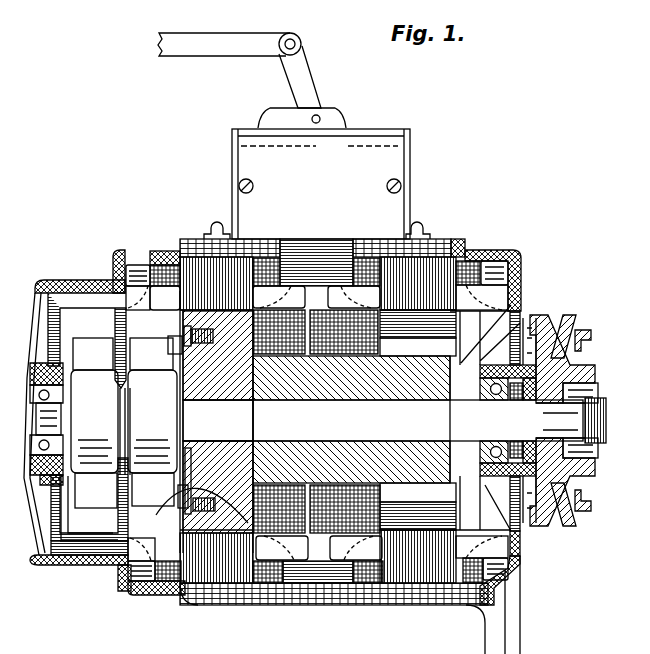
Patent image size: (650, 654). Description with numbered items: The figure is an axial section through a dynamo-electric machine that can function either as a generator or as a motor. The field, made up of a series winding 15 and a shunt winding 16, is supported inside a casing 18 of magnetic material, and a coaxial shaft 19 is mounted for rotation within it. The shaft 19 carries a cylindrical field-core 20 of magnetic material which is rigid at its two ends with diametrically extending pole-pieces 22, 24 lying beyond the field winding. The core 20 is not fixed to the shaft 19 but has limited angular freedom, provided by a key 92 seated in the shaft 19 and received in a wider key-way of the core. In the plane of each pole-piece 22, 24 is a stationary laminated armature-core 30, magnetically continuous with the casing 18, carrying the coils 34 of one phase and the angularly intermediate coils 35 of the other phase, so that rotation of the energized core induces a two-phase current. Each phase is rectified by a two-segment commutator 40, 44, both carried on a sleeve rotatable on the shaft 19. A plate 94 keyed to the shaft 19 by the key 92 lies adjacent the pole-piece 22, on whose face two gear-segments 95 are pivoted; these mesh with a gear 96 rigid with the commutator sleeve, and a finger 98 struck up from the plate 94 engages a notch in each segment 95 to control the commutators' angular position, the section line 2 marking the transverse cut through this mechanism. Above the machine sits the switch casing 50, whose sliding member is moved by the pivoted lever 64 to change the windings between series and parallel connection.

The section line 2— 2 is at (195, 175).
The series winding 15 is at (282, 568).
The shunt winding 16 is at (322, 560).
The casing 18 is at (304, 597).
The shaft 19 is at (429, 419).
The field-core 20 is at (445, 483).
The pole-piece 22 is at (170, 312).
The pole-piece 24 is at (526, 322).
The armature-core 30 is at (167, 243).
The coils 34 is at (109, 256).
The coils 35 is at (126, 291).
The commutator 40 is at (94, 423).
The commutator 44 is at (152, 422).
The enclosing casing 50 is at (351, 142).
The pivoted lever 64 is at (316, 80).
The key 92 is at (218, 420).
The plate 94 is at (230, 576).
The gear-segments 95 is at (176, 328).
The gear 96 is at (176, 416).
The finger 98 is at (185, 498).